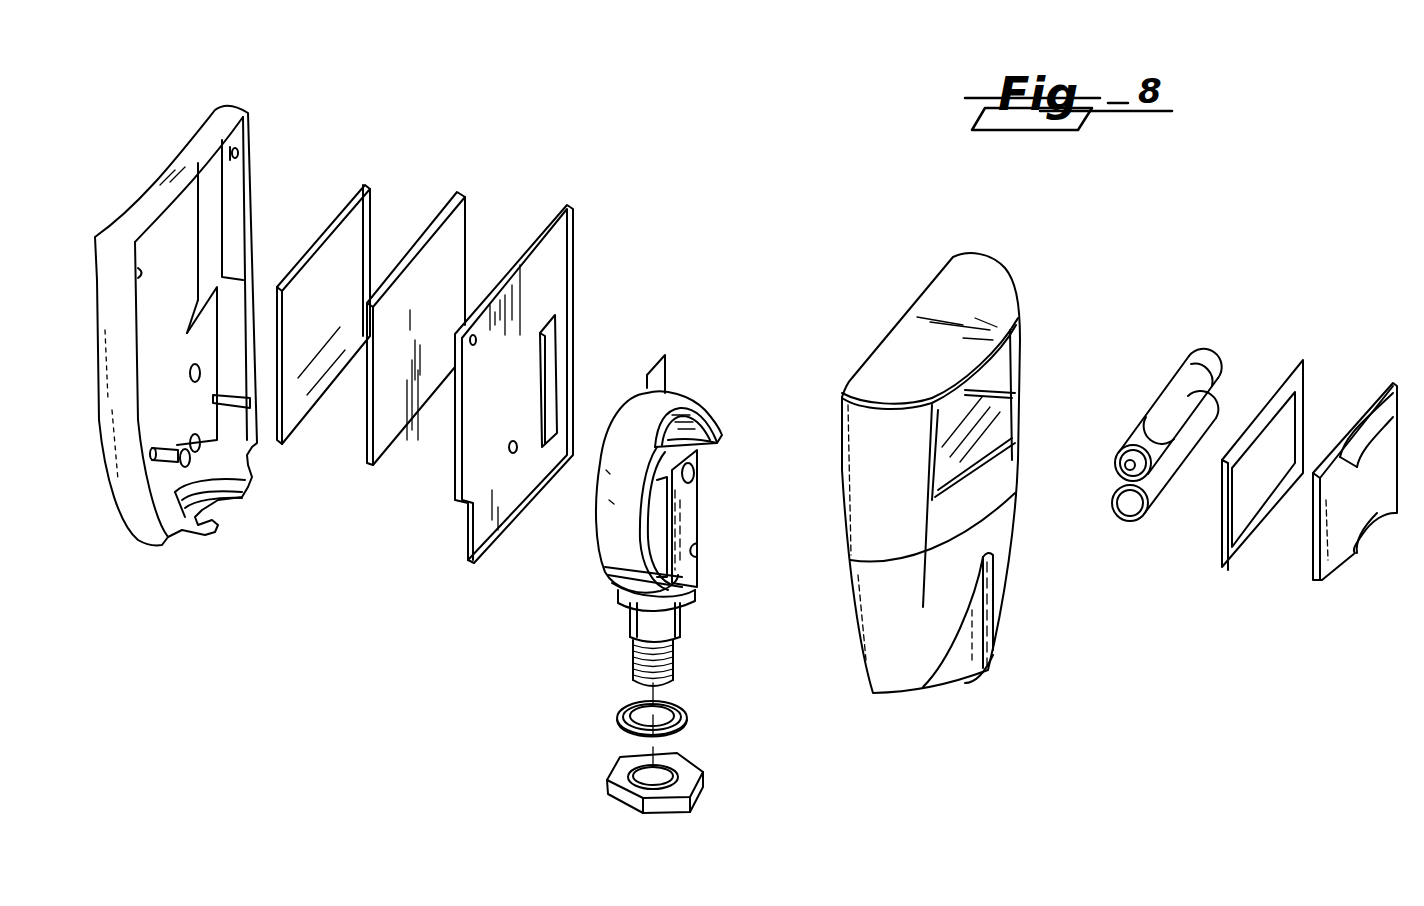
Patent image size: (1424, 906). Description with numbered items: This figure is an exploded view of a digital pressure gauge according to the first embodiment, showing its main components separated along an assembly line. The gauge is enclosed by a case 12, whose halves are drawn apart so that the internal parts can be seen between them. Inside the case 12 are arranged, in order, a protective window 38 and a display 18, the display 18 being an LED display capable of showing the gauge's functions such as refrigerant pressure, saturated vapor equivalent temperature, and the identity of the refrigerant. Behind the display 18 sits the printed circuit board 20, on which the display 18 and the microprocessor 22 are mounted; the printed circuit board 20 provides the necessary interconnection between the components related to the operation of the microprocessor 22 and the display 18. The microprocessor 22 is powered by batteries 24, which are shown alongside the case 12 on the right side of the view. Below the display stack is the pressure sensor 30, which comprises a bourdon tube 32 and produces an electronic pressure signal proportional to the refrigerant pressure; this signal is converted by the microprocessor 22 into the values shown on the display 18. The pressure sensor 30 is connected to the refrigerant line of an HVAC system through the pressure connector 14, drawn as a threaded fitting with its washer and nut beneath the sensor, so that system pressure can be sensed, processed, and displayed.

The case 12 is at (182, 150).
The pressure connector 14 is at (632, 652).
The display 18 is at (457, 192).
The printed circuit board 20 is at (562, 203).
The microprocessor 22 is at (550, 398).
The batteries 24 is at (1167, 380).
The pressure sensor 30 is at (600, 584).
The bourdon tube 32 is at (627, 553).
The protective window 38 is at (367, 183).